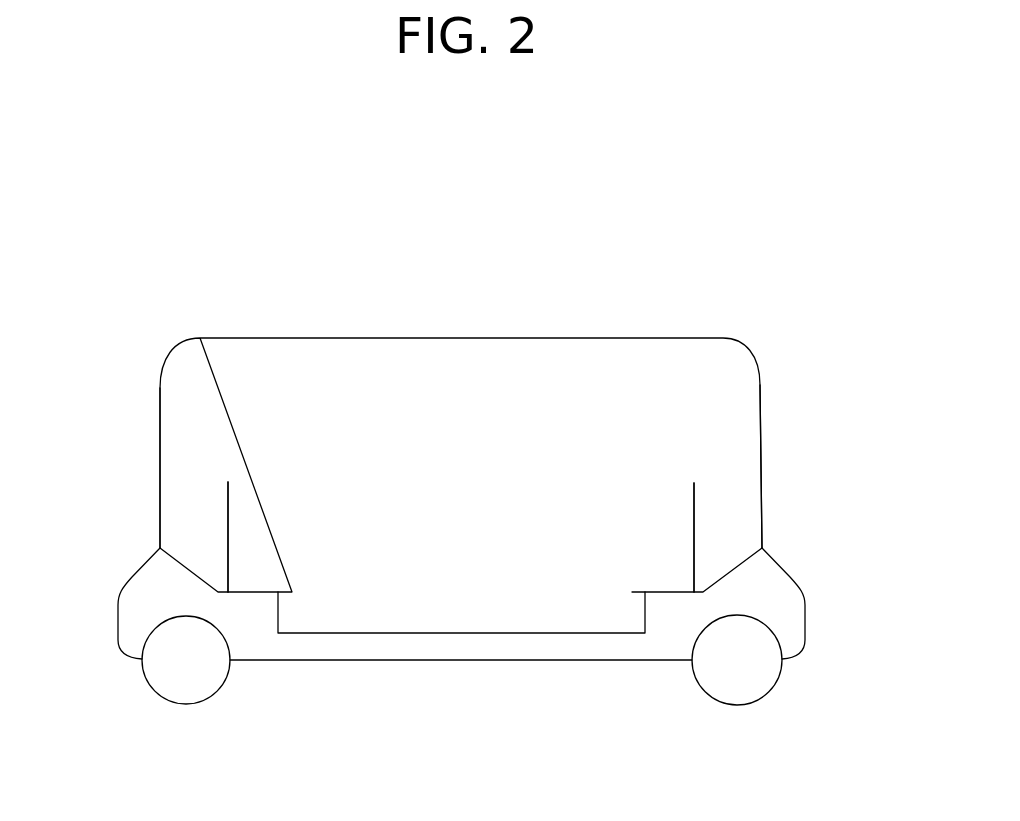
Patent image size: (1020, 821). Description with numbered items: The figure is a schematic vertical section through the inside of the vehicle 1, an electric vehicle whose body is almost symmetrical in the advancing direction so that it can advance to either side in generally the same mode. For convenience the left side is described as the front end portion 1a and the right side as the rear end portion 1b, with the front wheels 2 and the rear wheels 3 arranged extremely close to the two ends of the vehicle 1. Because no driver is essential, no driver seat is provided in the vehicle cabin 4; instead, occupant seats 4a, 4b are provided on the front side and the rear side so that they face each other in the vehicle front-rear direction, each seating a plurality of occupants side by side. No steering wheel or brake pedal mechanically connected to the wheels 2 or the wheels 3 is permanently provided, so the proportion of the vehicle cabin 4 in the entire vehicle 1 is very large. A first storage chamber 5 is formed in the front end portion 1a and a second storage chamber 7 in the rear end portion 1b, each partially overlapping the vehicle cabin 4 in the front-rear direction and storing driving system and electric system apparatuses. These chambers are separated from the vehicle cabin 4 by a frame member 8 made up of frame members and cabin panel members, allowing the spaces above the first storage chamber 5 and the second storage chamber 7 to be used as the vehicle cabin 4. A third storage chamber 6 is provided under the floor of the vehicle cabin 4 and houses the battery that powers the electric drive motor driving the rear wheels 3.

The vehicle 1 is at (613, 338).
The front end portion 1a is at (160, 437).
The rear end portion 1b is at (762, 437).
The front wheels 2 is at (165, 702).
The rear wheels 3 is at (752, 703).
The vehicle cabin 4 is at (467, 485).
The occupant seat 4a is at (229, 523).
The occupant seat 4b is at (693, 523).
The first storage chamber 5 is at (170, 603).
The third storage chamber 6 is at (502, 645).
The second storage chamber 7 is at (773, 603).
The frame member 8 is at (374, 633).